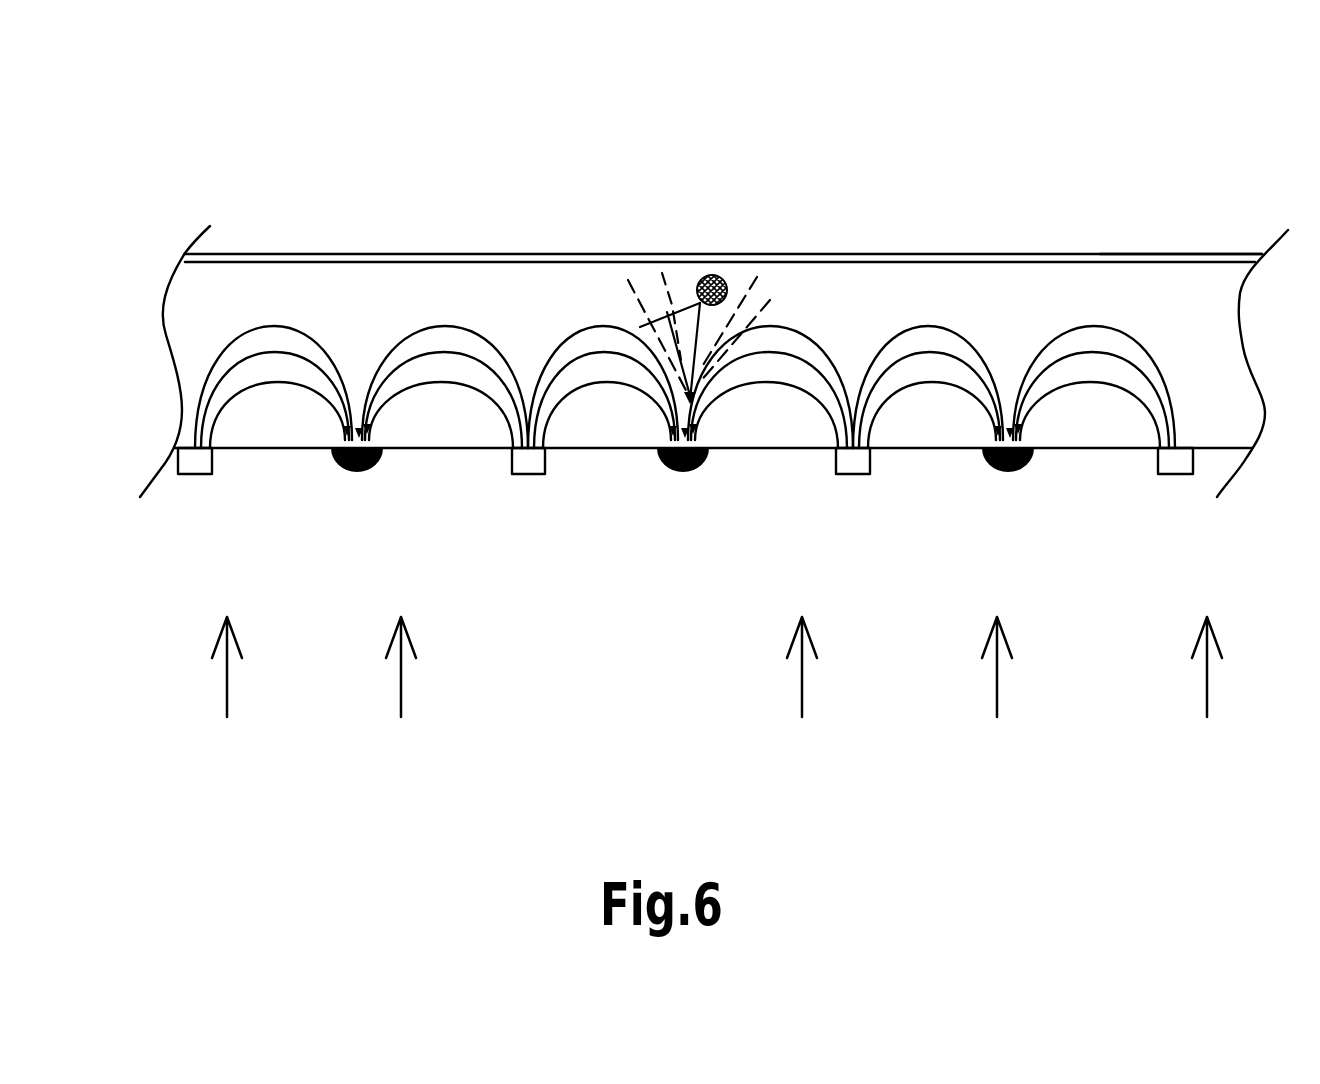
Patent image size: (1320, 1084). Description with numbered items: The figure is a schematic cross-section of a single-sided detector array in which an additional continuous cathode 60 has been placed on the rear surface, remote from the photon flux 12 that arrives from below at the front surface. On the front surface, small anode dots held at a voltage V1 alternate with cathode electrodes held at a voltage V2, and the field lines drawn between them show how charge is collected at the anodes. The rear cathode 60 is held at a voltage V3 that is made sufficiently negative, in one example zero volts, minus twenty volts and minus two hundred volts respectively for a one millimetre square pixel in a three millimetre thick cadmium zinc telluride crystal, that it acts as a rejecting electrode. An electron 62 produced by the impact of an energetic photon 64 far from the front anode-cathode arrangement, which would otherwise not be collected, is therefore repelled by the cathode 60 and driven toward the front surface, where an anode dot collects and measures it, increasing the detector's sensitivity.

The photon flux 12 is at (713, 695).
The cathode 60 is at (900, 253).
The electron 62 is at (702, 281).
The energetic photon 64 is at (700, 303).
The anode voltage V1 is at (982, 457).
The front cathode voltage V2 is at (1207, 496).
The rear cathode voltage V3 is at (1126, 253).